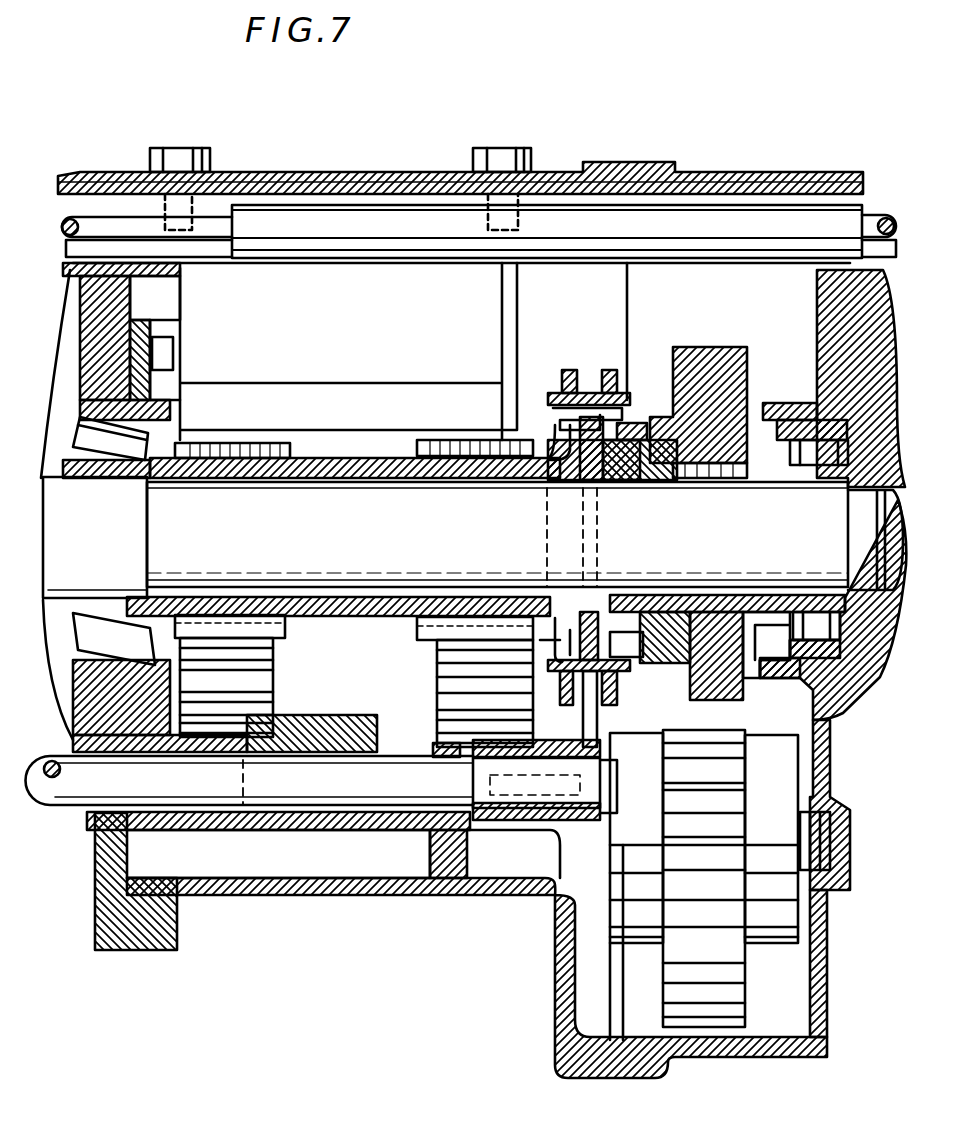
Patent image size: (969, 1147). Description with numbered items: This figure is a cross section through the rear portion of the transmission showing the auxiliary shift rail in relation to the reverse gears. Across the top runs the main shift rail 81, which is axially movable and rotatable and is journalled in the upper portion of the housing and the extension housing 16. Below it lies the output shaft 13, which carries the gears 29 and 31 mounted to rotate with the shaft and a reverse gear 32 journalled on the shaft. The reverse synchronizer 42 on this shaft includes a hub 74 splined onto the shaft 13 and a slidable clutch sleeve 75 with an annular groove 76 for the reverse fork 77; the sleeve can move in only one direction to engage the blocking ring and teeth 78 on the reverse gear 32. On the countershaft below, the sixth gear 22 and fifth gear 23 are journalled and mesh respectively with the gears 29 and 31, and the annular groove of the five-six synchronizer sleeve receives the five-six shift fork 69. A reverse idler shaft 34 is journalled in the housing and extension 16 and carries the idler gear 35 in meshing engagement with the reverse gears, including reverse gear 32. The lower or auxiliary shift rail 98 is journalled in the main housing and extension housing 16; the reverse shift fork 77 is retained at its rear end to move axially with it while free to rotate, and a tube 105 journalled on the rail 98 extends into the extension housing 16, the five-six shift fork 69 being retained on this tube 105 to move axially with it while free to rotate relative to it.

The output shaft 13 is at (255, 543).
The extension housing 16 is at (832, 765).
The sixth gear 22 is at (275, 665).
The fifth gear 23 is at (450, 692).
The gear 29 is at (230, 445).
The gear 31 is at (450, 445).
The reverse gear 32 is at (745, 380).
The reverse idler shaft 34 is at (822, 828).
The idler gear 35 is at (715, 1022).
The reverse synchronizer 42 is at (623, 350).
The 5-6 shift fork 69 is at (325, 718).
The hub 74 is at (545, 485).
The clutch sleeve 75 is at (557, 388).
The annular groove 76 is at (592, 392).
The reverse shift fork 77 is at (518, 838).
The blocking ring and teeth 78 is at (660, 420).
The shift rail 81 is at (385, 222).
The lower shift rail 98 is at (75, 800).
The tube 105 is at (208, 840).